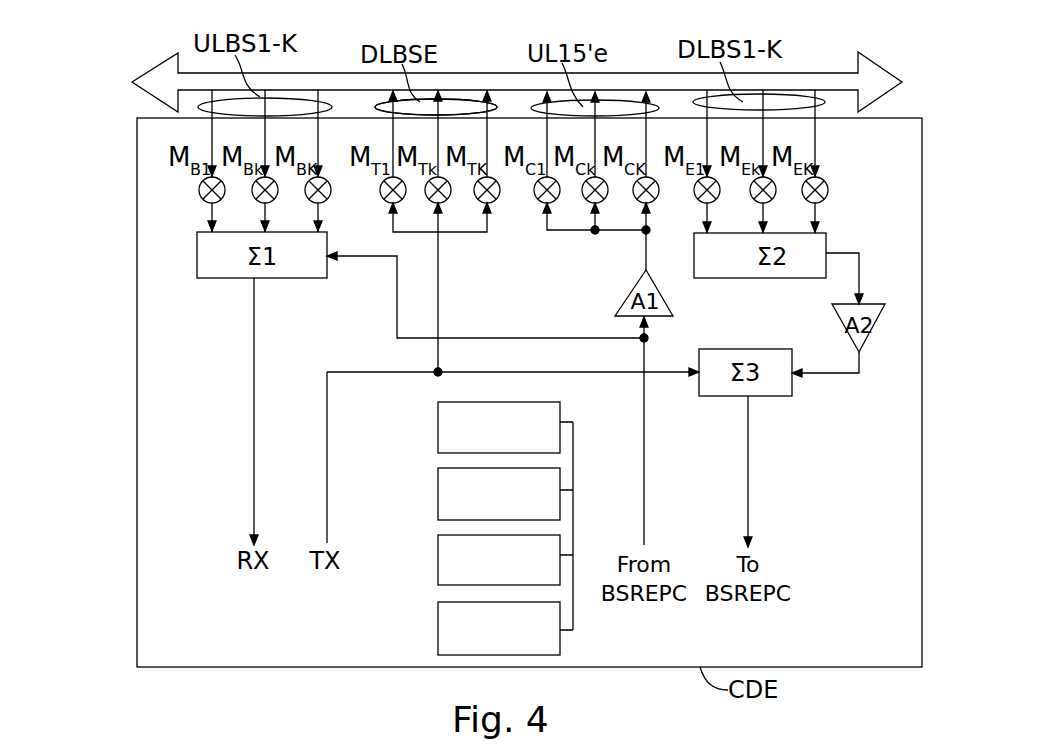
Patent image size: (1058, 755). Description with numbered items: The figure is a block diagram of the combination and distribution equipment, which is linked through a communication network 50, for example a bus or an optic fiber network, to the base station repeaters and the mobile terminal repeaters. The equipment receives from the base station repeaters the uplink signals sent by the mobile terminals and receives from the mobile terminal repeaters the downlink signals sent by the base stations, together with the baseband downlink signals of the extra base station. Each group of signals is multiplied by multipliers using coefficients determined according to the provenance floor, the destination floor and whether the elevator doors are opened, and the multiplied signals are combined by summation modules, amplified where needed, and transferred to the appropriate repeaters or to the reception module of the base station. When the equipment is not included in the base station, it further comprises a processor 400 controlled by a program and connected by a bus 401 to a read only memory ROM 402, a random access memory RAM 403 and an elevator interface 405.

The communication network 50 is at (487, 80).
The processor 400 is at (438, 430).
The bus 401 is at (573, 432).
The read only memory ROM 402 is at (438, 563).
The random access memory RAM 403 is at (438, 497).
The elevator interface 405 is at (438, 630).